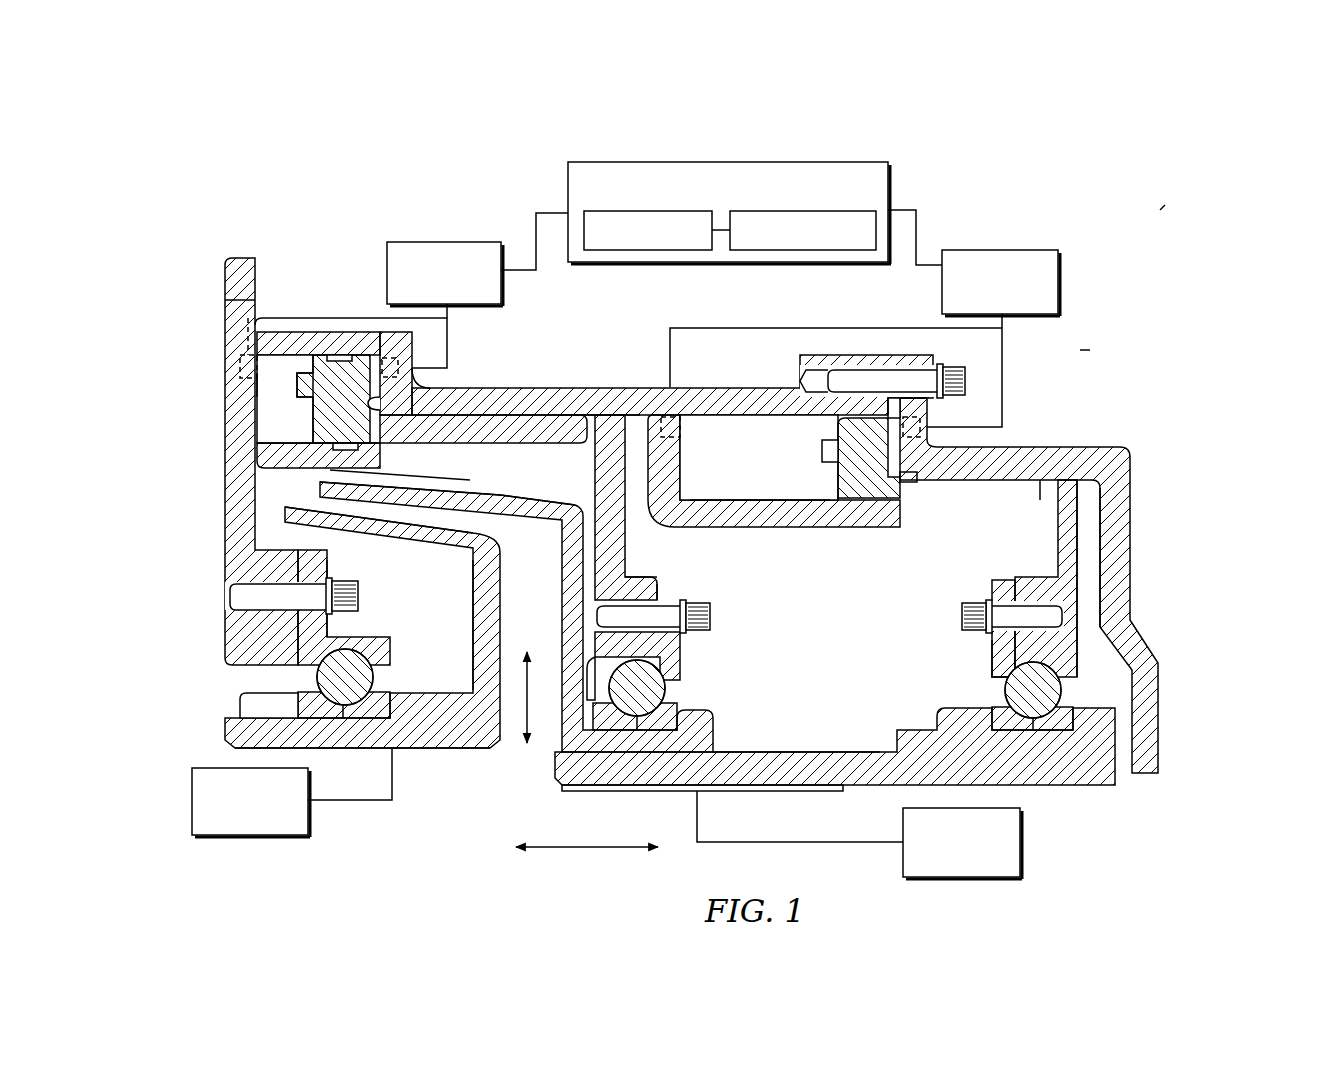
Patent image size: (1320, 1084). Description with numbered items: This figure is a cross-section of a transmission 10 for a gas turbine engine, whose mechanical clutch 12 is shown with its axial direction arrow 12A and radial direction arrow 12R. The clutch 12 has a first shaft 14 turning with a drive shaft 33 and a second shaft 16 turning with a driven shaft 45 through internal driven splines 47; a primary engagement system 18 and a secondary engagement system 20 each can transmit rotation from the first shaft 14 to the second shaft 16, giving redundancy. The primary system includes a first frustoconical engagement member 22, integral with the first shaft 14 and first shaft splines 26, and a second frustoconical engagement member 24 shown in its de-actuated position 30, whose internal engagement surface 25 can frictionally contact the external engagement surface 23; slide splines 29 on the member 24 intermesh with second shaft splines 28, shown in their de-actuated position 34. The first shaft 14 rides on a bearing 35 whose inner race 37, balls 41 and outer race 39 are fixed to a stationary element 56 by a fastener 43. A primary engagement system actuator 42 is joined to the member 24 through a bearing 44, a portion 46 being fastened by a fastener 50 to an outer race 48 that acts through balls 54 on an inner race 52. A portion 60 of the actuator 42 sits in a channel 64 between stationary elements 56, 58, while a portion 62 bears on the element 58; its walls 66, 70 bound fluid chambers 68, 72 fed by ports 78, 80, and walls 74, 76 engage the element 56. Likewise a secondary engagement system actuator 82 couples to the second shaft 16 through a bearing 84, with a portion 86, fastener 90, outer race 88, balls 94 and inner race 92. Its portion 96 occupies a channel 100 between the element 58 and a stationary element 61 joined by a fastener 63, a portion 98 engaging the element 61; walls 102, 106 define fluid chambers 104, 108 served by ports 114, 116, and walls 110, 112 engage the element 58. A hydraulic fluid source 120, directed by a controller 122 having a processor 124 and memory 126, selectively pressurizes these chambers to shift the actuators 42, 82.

The transmission 10 is at (1155, 215).
The mechanical clutch 12 is at (1085, 345).
The axial direction arrow 12A is at (562, 850).
The radial direction arrow 12R is at (532, 703).
The first shaft 14 is at (460, 712).
The second shaft 16 is at (1072, 768).
The primary engagement system 18 is at (522, 480).
The secondary engagement system 20 is at (770, 742).
The first frustoconical engagement member 22 is at (470, 607).
The external engagement surface 23 is at (320, 508).
The second frustoconical engagement member 24 is at (556, 566).
The internal engagement surface 25 is at (480, 510).
The first shaft splines 26 is at (428, 750).
The second shaft splines 28 is at (805, 750).
The slide splines 29 is at (700, 752).
The de-actuated position 30 is at (411, 480).
The drive shaft 33 is at (265, 840).
The de-actuated position 34 is at (855, 748).
The bearing 35 is at (372, 624).
The inner race 37 is at (387, 682).
The outer race 39 is at (306, 567).
The balls 41 is at (342, 676).
The primary engagement system actuator 42 is at (634, 522).
The fastener 43 is at (262, 600).
The bearing 44 is at (688, 660).
The driven shaft 45 is at (1026, 840).
The portion 46 is at (636, 578).
The driven splines 47 is at (757, 792).
The outer race 48 is at (668, 590).
The fastener 50 is at (660, 618).
The inner race 52 is at (667, 708).
The balls 54 is at (648, 692).
The stationary element 56 is at (270, 637).
The stationary element 58 is at (571, 393).
The portion 60 is at (323, 427).
The stationary element 61 is at (1112, 462).
The portion 62 is at (606, 413).
The fastener 63 is at (900, 378).
The channel 64 is at (277, 355).
The wall 66 is at (312, 407).
The fluid chamber 68 is at (270, 395).
The wall 70 is at (378, 403).
The fluid chamber 72 is at (377, 355).
The wall 74 is at (322, 357).
The wall 76 is at (335, 443).
The port 78 is at (243, 368).
The port 80 is at (400, 366).
The secondary engagement system actuator 82 is at (1084, 545).
The bearing 84 is at (985, 676).
The portion 86 is at (1040, 576).
The outer race 88 is at (1000, 588).
The fastener 90 is at (1000, 617).
The inner race 92 is at (990, 700).
The balls 94 is at (1040, 697).
The portion 96 is at (836, 487).
The portion 98 is at (1056, 495).
The channel 100 is at (722, 440).
The wall 102 is at (833, 425).
The fluid chamber 104 is at (745, 450).
The wall 106 is at (922, 427).
The fluid chamber 108 is at (895, 408).
The wall 110 is at (890, 418).
The wall 112 is at (878, 492).
The port 114 is at (672, 418).
The port 116 is at (915, 423).
The hydraulic fluid source 120 is at (448, 236).
The controller 122 is at (850, 160).
The processor 124 is at (820, 211).
The memory 126 is at (622, 211).